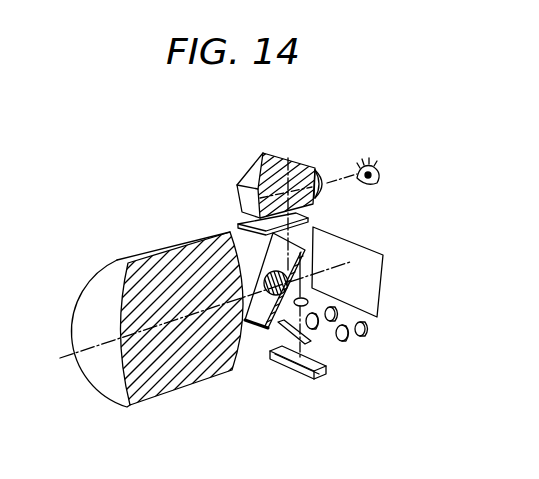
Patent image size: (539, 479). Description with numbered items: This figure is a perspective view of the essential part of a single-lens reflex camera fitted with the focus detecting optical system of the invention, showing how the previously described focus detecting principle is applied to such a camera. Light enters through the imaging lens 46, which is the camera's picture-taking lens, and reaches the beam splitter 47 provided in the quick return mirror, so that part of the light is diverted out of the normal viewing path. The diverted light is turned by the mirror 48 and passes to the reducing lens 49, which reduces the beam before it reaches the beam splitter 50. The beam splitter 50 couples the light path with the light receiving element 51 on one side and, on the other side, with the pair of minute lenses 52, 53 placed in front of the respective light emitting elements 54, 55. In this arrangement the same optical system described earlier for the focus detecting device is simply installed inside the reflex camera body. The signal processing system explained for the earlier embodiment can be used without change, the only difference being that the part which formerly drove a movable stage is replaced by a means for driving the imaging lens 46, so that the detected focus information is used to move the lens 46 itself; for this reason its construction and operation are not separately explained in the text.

The imaging lens 46 is at (151, 262).
The beam splitter provided in a quick return mirror 47 is at (244, 238).
The mirror 48 is at (311, 283).
The reducing lens 49 is at (308, 300).
The beam splitter 50 is at (278, 328).
The light receiving element 51 is at (293, 378).
The minute lens 52 is at (318, 328).
The minute lens 53 is at (349, 336).
The light emitting element 54 is at (338, 312).
The light emitting element 55 is at (368, 330).